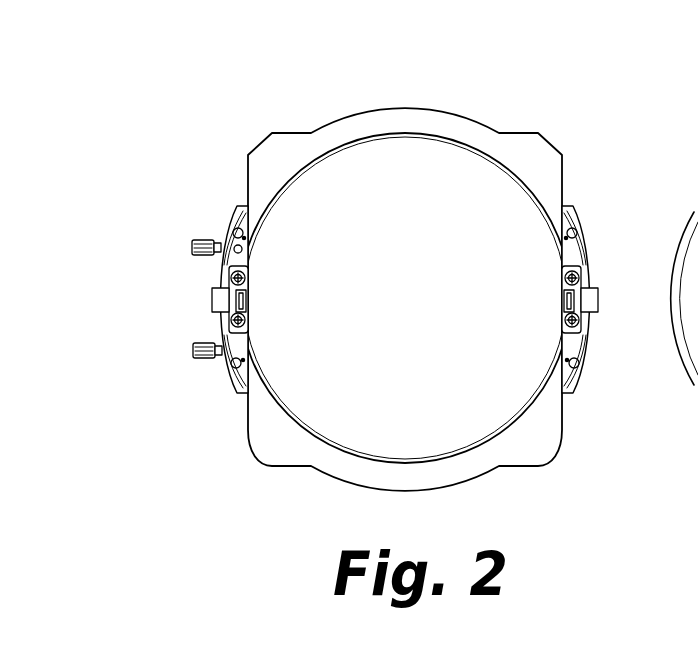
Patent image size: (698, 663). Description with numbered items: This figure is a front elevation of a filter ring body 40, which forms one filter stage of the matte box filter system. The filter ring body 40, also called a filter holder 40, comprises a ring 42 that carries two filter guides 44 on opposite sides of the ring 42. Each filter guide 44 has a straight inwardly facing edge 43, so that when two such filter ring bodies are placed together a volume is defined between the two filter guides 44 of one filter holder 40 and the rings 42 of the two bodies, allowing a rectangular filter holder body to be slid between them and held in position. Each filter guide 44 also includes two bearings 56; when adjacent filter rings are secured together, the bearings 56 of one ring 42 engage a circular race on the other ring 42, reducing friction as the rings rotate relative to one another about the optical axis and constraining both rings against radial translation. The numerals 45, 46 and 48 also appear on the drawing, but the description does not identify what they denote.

The filter ring body 40 is at (414, 70).
The ring 42 is at (533, 158).
The straight inwardly facing edge 43 is at (250, 238).
The filter guide 44 is at (225, 246).
The adapter ring 45 is at (345, 148).
The pin 46 is at (208, 298).
The slot 48 is at (249, 299).
The bearing 56 is at (236, 232).